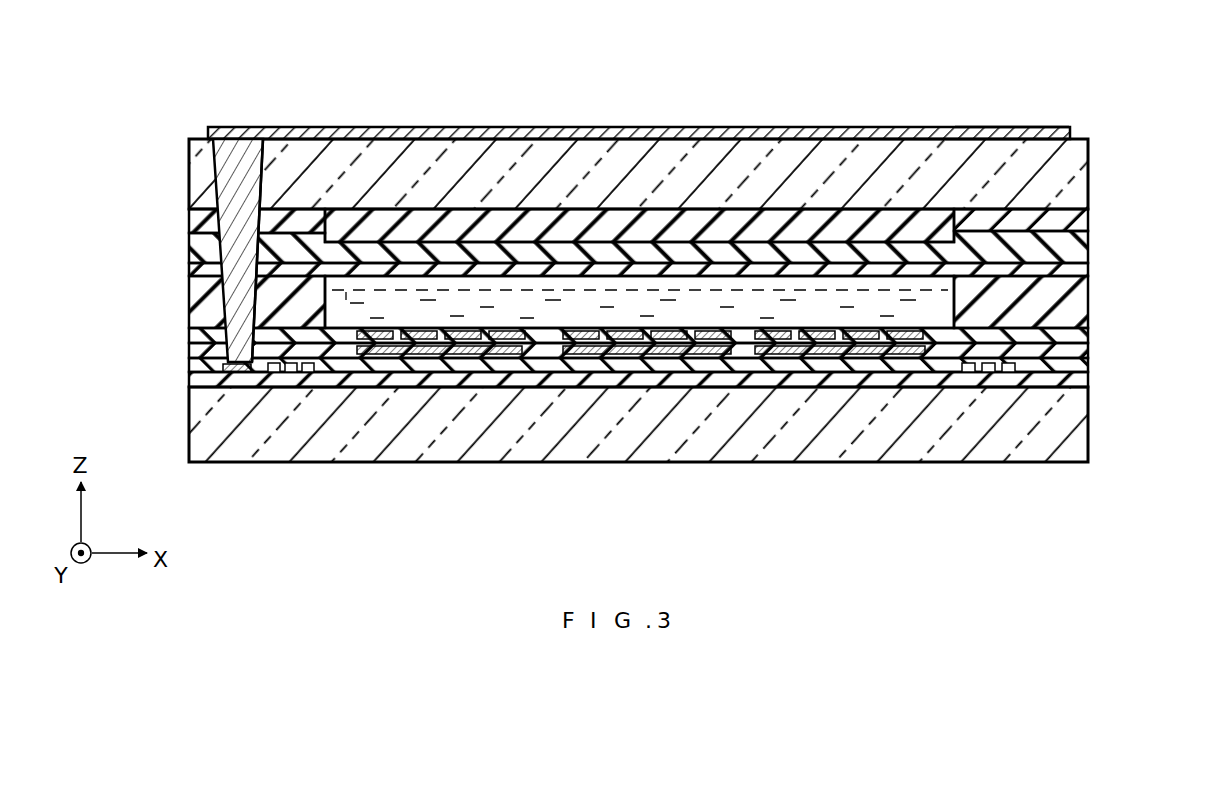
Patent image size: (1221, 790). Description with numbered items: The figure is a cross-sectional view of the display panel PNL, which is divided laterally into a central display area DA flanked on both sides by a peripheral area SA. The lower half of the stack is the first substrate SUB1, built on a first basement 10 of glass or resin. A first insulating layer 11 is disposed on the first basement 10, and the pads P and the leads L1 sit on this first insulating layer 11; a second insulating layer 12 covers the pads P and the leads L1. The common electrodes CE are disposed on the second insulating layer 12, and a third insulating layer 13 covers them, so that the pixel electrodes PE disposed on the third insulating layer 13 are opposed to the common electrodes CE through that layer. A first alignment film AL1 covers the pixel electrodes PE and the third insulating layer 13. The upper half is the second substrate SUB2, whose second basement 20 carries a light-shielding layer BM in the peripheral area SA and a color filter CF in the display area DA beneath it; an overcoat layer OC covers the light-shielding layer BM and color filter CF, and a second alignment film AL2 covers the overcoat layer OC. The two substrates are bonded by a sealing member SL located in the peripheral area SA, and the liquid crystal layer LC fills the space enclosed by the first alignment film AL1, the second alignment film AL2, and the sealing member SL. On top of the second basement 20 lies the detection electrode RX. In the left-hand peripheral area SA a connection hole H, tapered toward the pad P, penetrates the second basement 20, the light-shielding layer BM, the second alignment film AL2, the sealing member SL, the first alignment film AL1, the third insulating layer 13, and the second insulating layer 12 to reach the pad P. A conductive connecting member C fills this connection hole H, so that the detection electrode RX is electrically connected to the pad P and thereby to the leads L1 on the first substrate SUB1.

The peripheral area SA is at (189, 130).
The display area DA is at (952, 40).
The display panel PNL is at (1097, 137).
The detection electrode RX is at (1018, 132).
The second substrate SUB2 is at (668, 174).
The second basement 20 is at (197, 176).
The light-shielding layer BM is at (197, 226).
The color filter CF is at (509, 222).
The overcoat layer OC is at (197, 252).
The second alignment film AL2 is at (197, 269).
The sealing member SL is at (197, 313).
The liquid crystal layer LC is at (890, 290).
The first alignment film AL1 is at (197, 337).
The third insulating layer 13 is at (197, 355).
The second insulating layer 12 is at (197, 366).
The first insulating layer 11 is at (197, 380).
The first substrate SUB1 is at (666, 424).
The first basement 10 is at (197, 434).
The common electrodes CE is at (453, 356).
The pixel electrodes PE is at (374, 331).
The connection hole H is at (236, 165).
The connecting member C is at (267, 152).
The pads P is at (243, 373).
The leads L1 is at (308, 373).